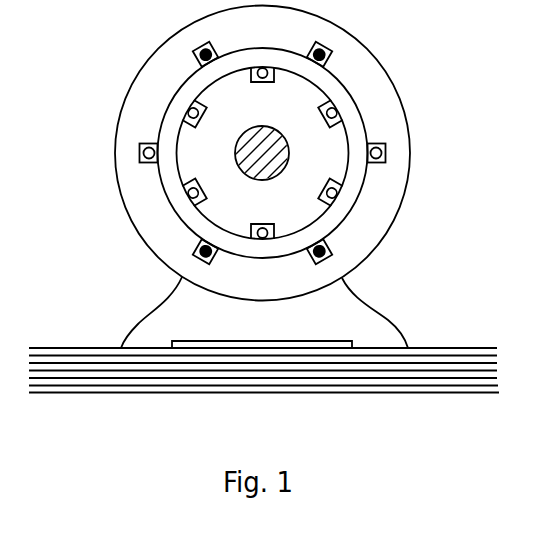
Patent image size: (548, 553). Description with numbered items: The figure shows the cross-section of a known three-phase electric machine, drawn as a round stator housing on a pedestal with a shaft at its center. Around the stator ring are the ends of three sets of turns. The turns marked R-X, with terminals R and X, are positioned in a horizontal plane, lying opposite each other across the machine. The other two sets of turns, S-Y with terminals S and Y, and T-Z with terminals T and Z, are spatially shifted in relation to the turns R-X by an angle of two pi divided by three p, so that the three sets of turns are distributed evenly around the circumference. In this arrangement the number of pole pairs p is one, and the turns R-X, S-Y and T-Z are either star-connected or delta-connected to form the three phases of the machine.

The turn terminal T is at (198, 47).
The turn terminal Y is at (326, 49).
The turn terminal X is at (138, 153).
The turn terminal R is at (386, 152).
The turn terminal S is at (195, 254).
The turn terminal Z is at (329, 254).